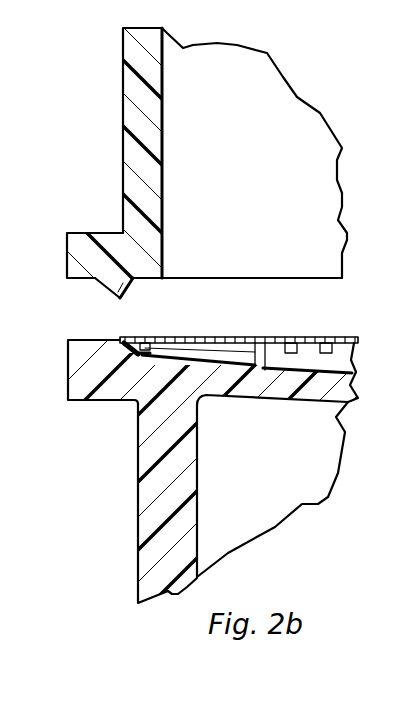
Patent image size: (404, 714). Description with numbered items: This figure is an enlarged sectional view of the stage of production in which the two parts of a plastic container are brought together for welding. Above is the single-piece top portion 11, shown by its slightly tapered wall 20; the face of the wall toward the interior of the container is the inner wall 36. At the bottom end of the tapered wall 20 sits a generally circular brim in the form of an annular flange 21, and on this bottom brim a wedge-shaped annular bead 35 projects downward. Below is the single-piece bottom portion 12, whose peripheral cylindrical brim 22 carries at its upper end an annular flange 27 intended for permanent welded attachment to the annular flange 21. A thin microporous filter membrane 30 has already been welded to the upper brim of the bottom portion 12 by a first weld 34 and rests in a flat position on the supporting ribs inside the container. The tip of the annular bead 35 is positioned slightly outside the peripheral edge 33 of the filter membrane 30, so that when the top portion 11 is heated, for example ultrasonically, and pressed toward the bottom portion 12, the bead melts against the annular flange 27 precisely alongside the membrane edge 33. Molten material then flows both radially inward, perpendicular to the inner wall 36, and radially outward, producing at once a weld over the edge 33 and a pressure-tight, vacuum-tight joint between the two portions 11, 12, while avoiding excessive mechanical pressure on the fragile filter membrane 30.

The top portion 11 is at (202, 160).
The slightly tapered wall 20 is at (143, 132).
The inner wall 36 is at (162, 184).
The annular flange 21 is at (72, 263).
The wedge-shaped annular bead 35 is at (127, 266).
The bottom portion 12 is at (202, 459).
The peripheral cylindrical brim 22 is at (202, 460).
The annular flange 27 is at (82, 377).
The filter membrane 30 is at (305, 337).
The edge of the filter membrane 33 is at (132, 335).
The weld 34 is at (133, 354).